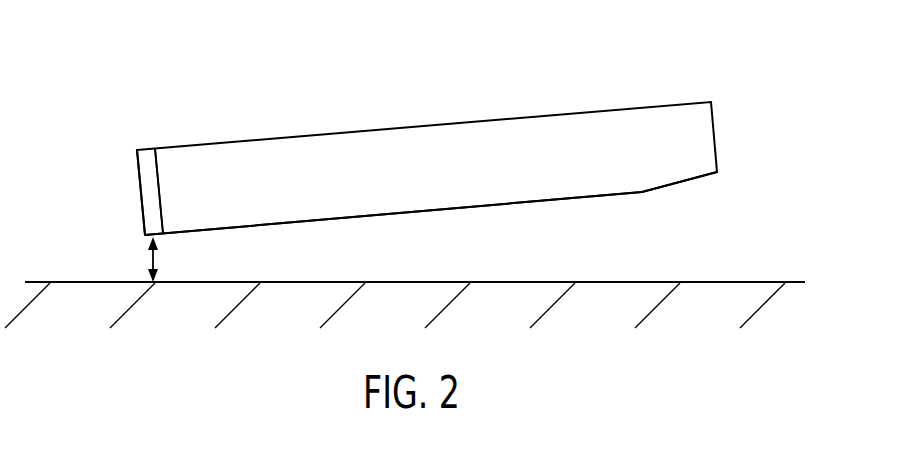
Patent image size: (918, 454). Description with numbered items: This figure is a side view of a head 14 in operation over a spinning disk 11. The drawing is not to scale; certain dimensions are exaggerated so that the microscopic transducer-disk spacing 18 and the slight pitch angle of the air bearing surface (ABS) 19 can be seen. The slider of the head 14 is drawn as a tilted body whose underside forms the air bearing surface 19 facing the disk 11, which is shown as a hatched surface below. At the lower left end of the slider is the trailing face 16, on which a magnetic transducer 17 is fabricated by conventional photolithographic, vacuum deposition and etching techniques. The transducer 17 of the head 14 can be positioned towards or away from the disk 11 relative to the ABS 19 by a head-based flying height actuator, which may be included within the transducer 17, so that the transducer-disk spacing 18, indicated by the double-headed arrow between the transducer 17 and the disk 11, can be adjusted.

The spinning disk 11 is at (755, 283).
The head 14 is at (637, 103).
The trailing face 16 is at (158, 185).
The magnetic transducer 17 is at (140, 190).
The transducer-disk spacing 18 is at (157, 262).
The air bearing surface (ABS) 19 is at (485, 208).